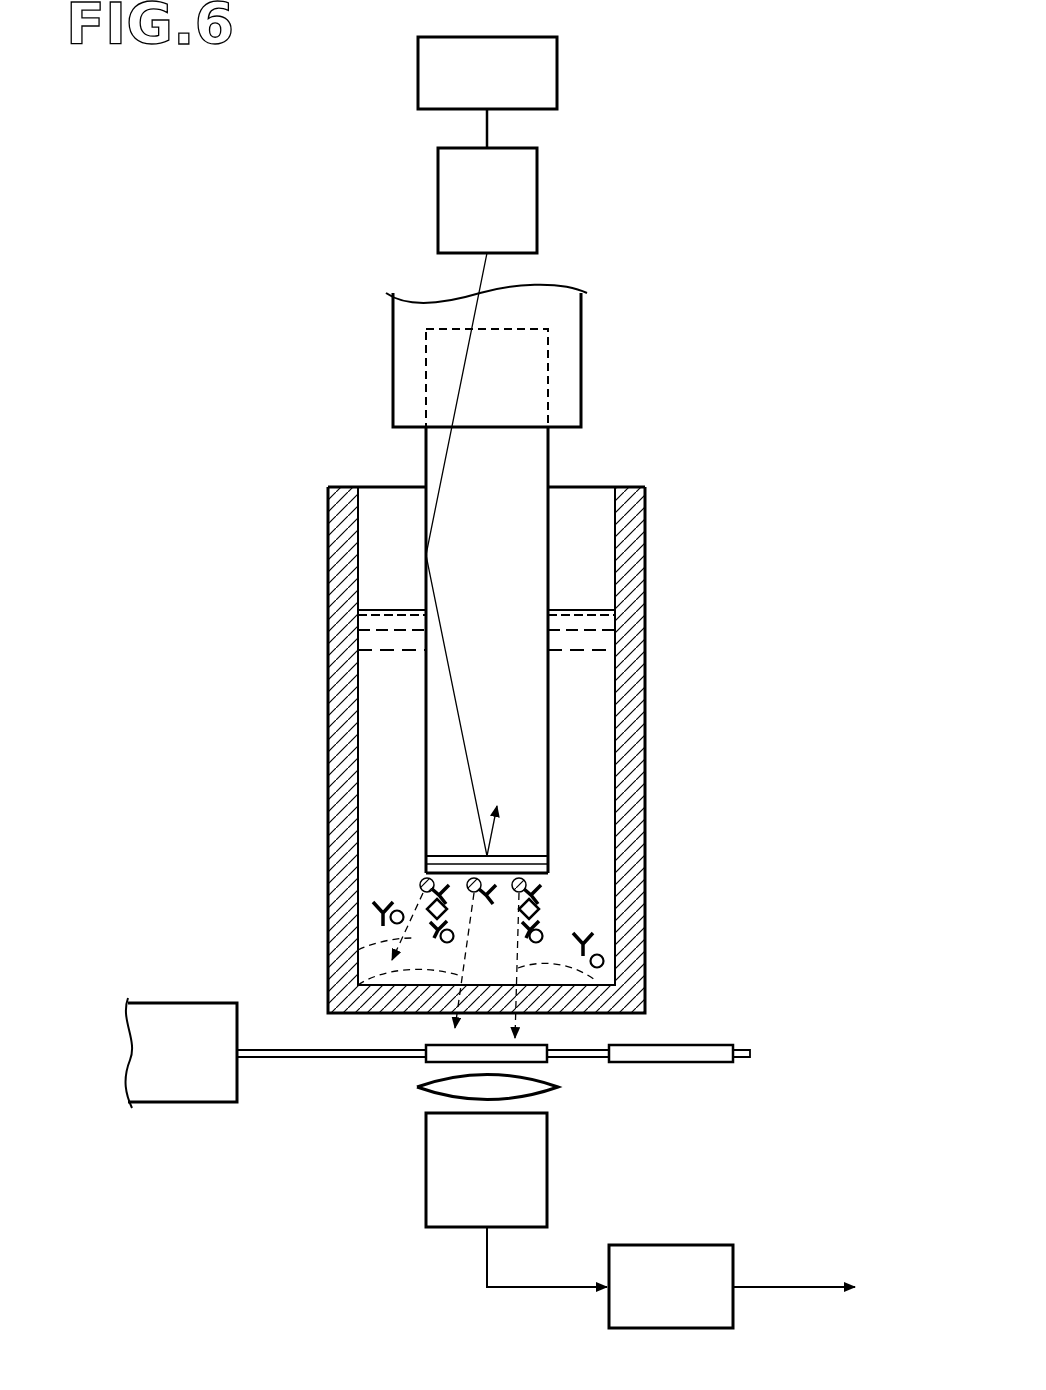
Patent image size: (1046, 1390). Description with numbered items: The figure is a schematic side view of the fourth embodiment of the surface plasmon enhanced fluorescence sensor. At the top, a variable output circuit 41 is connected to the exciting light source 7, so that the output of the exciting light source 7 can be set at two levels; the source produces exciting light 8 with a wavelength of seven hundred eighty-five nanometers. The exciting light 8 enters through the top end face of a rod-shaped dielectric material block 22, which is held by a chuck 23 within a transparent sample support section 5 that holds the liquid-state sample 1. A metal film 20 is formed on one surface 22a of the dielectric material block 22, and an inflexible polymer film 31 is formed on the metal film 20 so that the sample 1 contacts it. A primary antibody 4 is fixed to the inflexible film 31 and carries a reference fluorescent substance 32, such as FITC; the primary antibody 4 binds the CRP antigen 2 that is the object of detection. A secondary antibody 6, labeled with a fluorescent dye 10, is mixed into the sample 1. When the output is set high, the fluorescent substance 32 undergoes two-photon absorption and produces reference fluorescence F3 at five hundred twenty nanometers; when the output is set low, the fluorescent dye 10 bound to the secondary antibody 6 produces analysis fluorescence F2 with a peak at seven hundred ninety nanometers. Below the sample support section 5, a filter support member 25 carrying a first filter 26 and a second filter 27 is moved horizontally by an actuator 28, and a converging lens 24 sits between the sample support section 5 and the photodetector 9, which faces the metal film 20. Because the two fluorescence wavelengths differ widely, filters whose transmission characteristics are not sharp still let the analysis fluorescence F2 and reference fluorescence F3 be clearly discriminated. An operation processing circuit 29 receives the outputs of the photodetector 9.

The variable output circuit 41 is at (557, 73).
The exciting light source 7 is at (537, 203).
The chuck 23 is at (581, 355).
The exciting light 8 is at (443, 459).
The sample support section 5 is at (645, 508).
The dielectric material block 22 is at (515, 545).
The sample 1 is at (595, 672).
The metal film 20 is at (548, 860).
The inflexible film 31 is at (548, 870).
The surface of the dielectric material block 22a is at (533, 890).
The fluorescent substance 32 is at (421, 878).
The CRP antigen 2 is at (545, 907).
The secondary antibody 6 is at (592, 931).
The fluorescent dye 10 is at (597, 953).
The primary antibody 4 is at (488, 894).
The reference fluorescence F3 is at (358, 985).
The analysis fluorescence F2 is at (645, 1013).
The actuator 28 is at (178, 1092).
The filter support member 25 is at (333, 1060).
The first filter 26 is at (432, 1055).
The second filter 27 is at (703, 1062).
The converging lens 24 is at (558, 1087).
The photodetector 9 is at (547, 1168).
The operation processing circuit 29 is at (690, 1246).